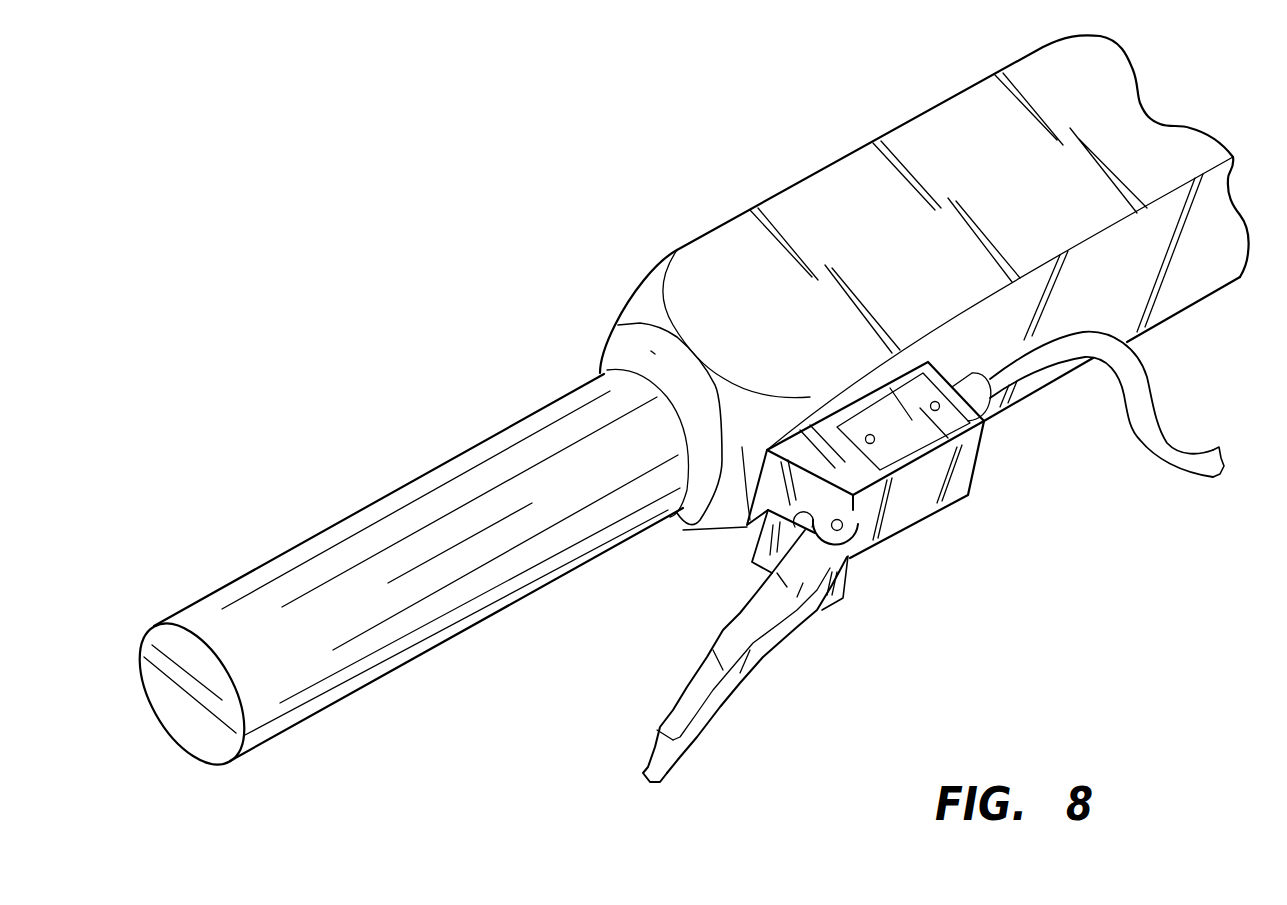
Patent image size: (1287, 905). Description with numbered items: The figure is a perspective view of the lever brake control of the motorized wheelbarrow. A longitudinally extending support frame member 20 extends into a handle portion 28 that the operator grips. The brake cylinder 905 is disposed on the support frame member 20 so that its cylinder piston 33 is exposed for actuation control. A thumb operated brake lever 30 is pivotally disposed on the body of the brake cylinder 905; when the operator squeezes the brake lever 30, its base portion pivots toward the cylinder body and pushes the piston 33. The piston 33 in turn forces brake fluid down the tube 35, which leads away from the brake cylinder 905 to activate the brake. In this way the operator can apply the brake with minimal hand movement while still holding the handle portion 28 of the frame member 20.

The support frame member 20 is at (805, 195).
The handle portion 28 is at (302, 697).
The cylinder piston 33 is at (765, 447).
The brake cylinder 905 is at (957, 493).
The tube 35 is at (1180, 473).
The brake lever 30 is at (987, 618).